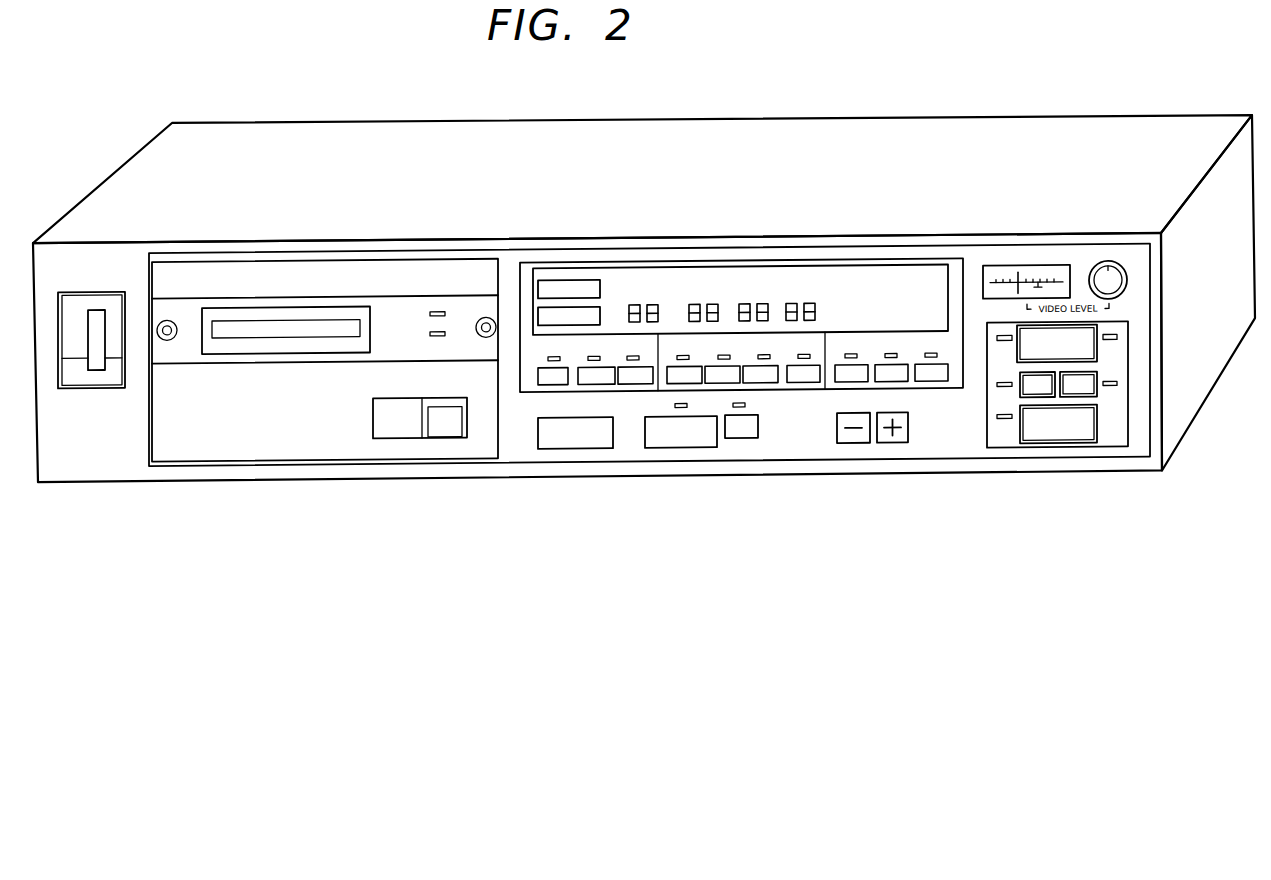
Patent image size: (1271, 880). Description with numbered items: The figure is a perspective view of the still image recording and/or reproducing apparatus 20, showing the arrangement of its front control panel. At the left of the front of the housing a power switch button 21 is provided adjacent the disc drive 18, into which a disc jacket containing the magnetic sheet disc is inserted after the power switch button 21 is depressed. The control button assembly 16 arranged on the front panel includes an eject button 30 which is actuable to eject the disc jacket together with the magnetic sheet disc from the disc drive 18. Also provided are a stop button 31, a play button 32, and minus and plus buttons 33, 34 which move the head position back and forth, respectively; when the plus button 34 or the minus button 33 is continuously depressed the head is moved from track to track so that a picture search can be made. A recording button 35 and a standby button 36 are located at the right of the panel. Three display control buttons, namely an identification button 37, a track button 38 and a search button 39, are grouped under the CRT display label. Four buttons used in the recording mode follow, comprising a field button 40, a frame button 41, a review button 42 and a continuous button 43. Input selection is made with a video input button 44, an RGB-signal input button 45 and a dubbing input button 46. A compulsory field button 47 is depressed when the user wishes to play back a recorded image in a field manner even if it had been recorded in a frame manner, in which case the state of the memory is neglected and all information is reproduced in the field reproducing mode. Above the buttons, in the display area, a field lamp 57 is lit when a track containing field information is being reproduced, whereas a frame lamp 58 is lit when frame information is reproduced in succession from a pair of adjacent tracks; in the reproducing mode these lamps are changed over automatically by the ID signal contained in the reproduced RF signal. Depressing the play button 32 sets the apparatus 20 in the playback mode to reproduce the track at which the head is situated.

The control button assembly 16 is at (766, 385).
The disc drive 18 is at (237, 352).
The recording and/or reproducing apparatus 20 is at (255, 136).
The power switch button 21 is at (97, 368).
The eject button 30 is at (450, 436).
The stop button 31 is at (573, 454).
The play button 32 is at (698, 455).
The minus button 33 is at (857, 453).
The plus button 34 is at (895, 454).
The recording button 35 is at (1090, 442).
The standby button 36 is at (1100, 425).
The identification button 37 is at (552, 390).
The track button 38 is at (602, 391).
The search button 39 is at (638, 391).
The field button 40 is at (693, 392).
The frame button 41 is at (732, 391).
The review button 42 is at (775, 393).
The continuous button 43 is at (810, 393).
The video input button 44 is at (857, 393).
The RGB-signal input button 45 is at (903, 394).
The dubbing input button 46 is at (940, 394).
The compulsory field button 47 is at (743, 445).
The field lamp 57 is at (603, 296).
The frame lamp 58 is at (603, 322).